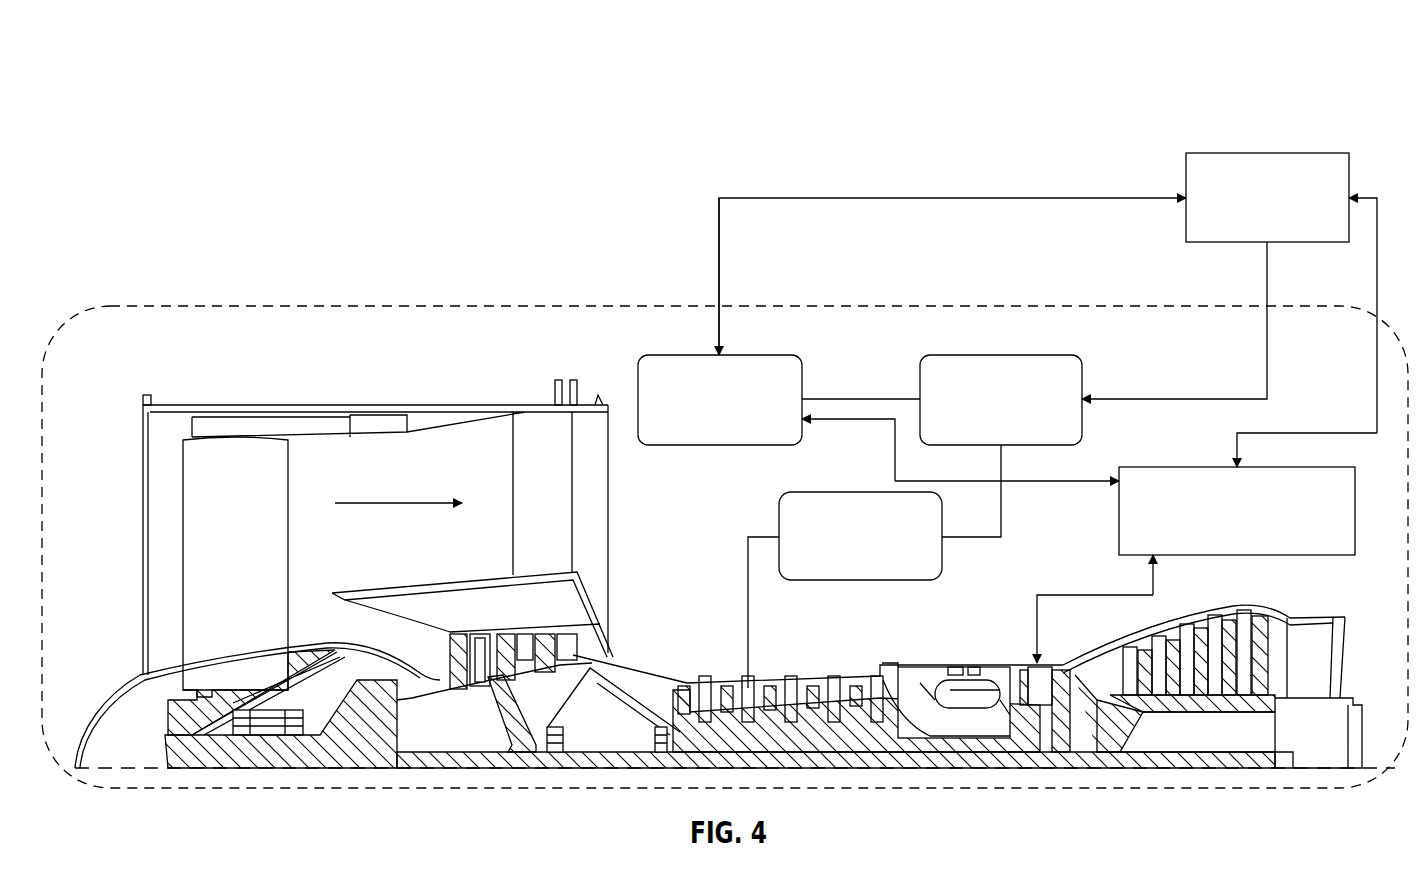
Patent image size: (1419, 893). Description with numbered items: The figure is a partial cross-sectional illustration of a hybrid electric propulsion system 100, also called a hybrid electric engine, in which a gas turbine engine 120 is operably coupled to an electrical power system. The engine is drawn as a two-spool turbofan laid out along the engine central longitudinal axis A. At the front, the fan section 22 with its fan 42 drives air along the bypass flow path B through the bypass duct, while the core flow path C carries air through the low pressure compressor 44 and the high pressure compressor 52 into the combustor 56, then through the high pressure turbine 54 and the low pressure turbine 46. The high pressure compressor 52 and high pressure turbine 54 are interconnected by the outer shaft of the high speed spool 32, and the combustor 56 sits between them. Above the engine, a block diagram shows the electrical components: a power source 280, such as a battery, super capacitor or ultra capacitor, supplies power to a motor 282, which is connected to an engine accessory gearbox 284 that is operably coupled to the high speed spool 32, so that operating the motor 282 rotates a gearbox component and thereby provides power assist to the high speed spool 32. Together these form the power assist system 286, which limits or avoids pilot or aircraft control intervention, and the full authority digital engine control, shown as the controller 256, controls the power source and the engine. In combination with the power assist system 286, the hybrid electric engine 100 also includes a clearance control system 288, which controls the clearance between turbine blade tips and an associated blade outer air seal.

The hybrid electric propulsion system 100 is at (278, 205).
The gas turbine engine 120 is at (222, 258).
The fan section 22 is at (240, 385).
The fan 42 is at (259, 536).
The low pressure compressor 44 is at (528, 648).
The high pressure compressor 52 is at (768, 738).
The high speed spool 32 is at (878, 720).
The combustor 56 is at (965, 690).
The high pressure turbine 54 is at (1073, 660).
The low pressure turbine 46 is at (1205, 630).
The controller 256 is at (1265, 153).
The power source 280 is at (702, 353).
The motor 282 is at (1005, 355).
The accessory gearbox 284 is at (943, 548).
The power assist system 286 is at (1016, 166).
The clearance control system 288 is at (1290, 467).
The engine central longitudinal axis A is at (1362, 768).
The bypass flow path B is at (403, 502).
The core flow path C is at (333, 632).